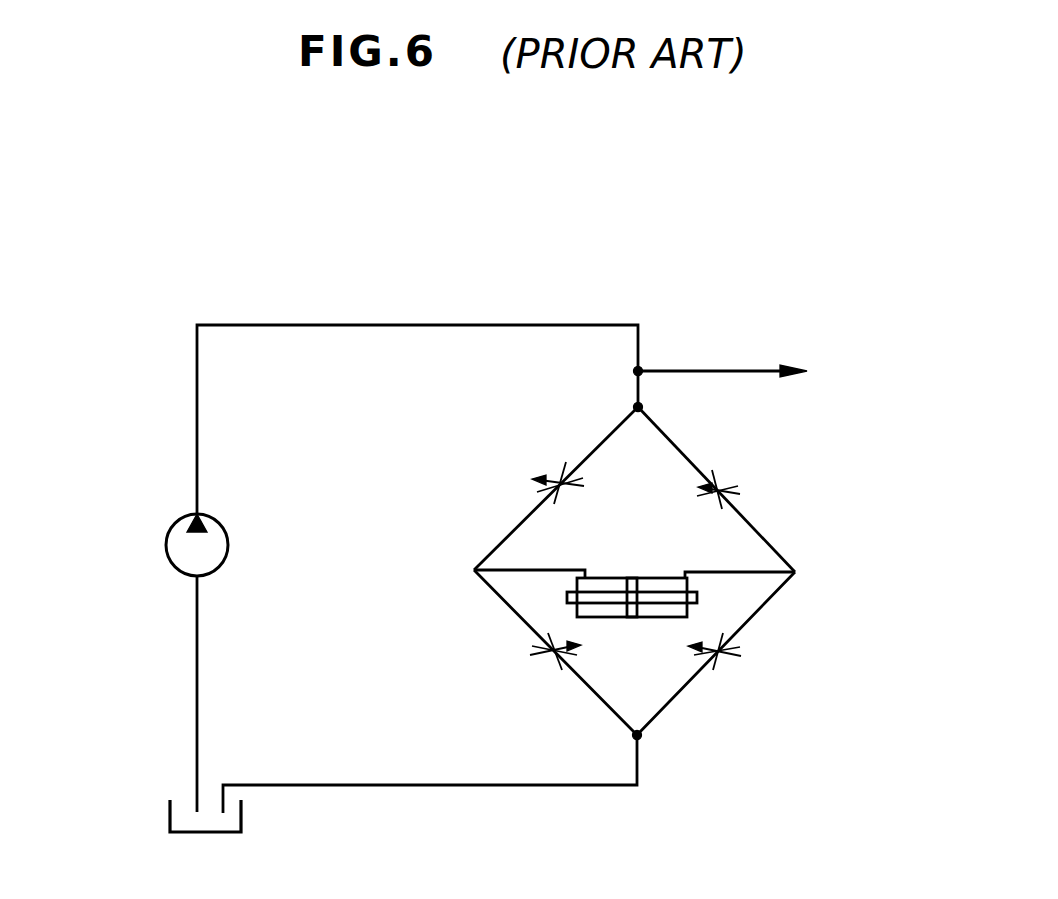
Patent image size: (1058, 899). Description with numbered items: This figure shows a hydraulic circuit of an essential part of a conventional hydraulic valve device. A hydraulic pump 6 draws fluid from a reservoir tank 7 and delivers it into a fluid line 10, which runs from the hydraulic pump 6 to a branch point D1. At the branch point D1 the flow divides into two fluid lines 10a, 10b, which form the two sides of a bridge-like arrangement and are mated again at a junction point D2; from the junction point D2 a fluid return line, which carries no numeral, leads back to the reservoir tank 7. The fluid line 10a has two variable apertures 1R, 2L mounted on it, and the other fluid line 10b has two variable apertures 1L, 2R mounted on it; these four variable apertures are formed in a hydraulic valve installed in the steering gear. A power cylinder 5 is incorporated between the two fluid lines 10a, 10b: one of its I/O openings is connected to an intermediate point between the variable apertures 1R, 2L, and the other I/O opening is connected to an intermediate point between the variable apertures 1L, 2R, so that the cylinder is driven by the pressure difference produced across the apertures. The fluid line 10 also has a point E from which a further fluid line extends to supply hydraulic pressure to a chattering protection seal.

The fluid line 10 is at (431, 325).
The fluid line 10a is at (602, 430).
The fluid line 10b is at (663, 431).
The hydraulic pump 6 is at (178, 524).
The reservoir tank 7 is at (168, 808).
The point E is at (640, 368).
The branch point D1 is at (635, 404).
The junction point D2 is at (640, 737).
The variable aperture 1R is at (548, 478).
The variable aperture 1L is at (722, 488).
The variable aperture 2L is at (553, 656).
The variable aperture 2R is at (724, 660).
The power cylinder 5 is at (600, 578).